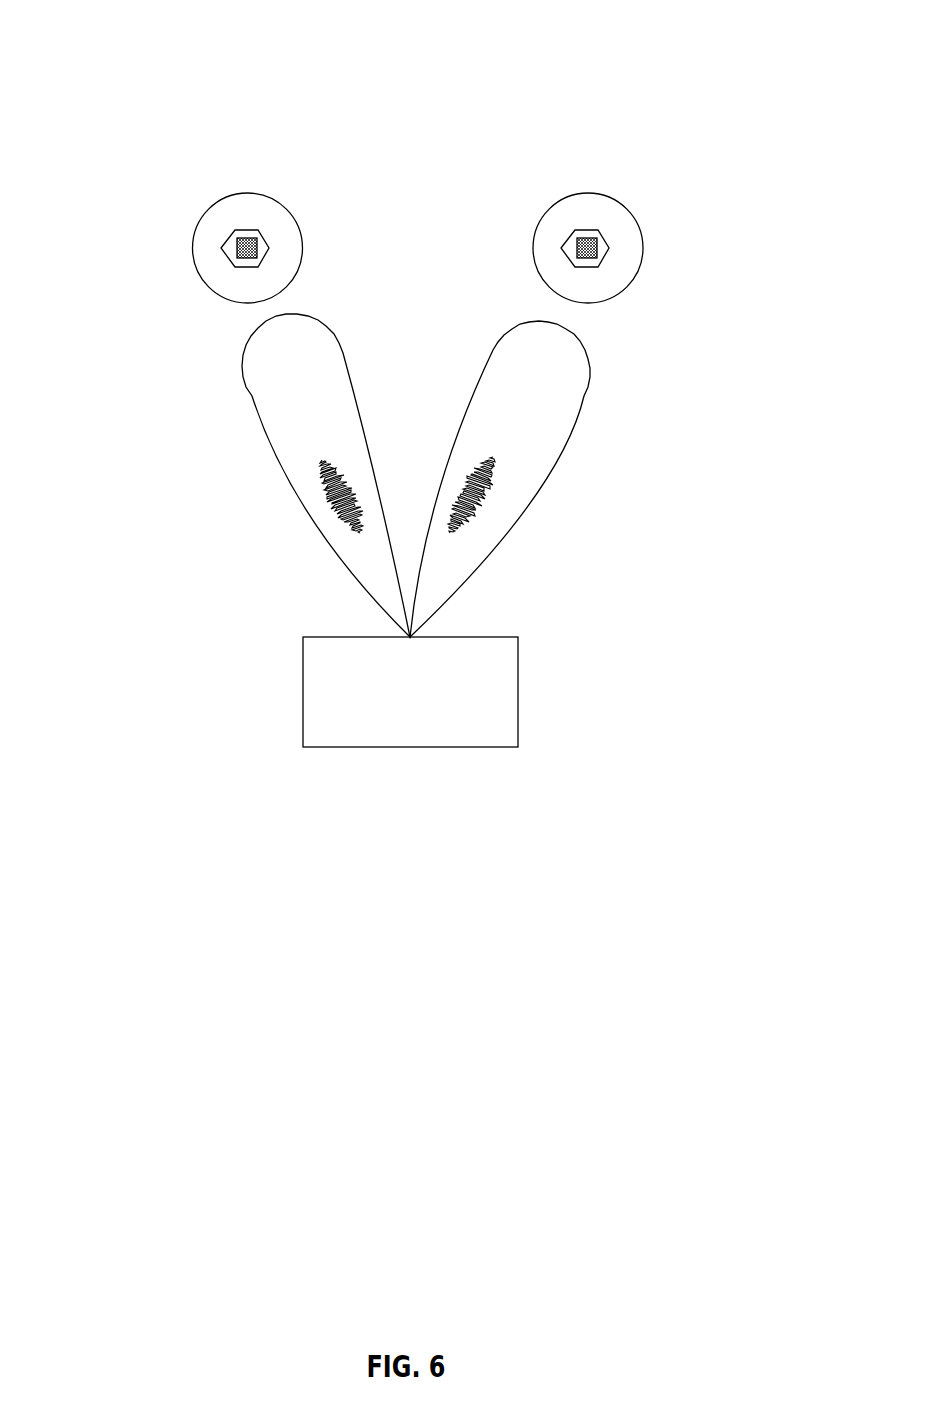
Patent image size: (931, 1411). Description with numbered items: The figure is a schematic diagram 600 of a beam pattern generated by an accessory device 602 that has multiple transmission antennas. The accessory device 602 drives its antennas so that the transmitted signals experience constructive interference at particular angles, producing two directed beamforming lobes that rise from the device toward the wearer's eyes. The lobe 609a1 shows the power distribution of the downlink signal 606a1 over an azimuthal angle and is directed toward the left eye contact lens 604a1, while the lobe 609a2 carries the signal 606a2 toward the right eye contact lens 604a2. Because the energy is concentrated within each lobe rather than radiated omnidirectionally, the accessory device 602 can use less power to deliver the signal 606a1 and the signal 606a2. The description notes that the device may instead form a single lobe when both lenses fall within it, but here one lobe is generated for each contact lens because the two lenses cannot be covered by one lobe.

The system 600 is at (457, 27).
The left eye contact lens 604a1 is at (302, 237).
The right eye contact lens 604a2 is at (640, 222).
The lobe 609a1 is at (248, 400).
The lobe 609a2 is at (590, 390).
The signal 606a1 is at (327, 505).
The signal 606a2 is at (493, 497).
The accessory device 602 is at (426, 719).